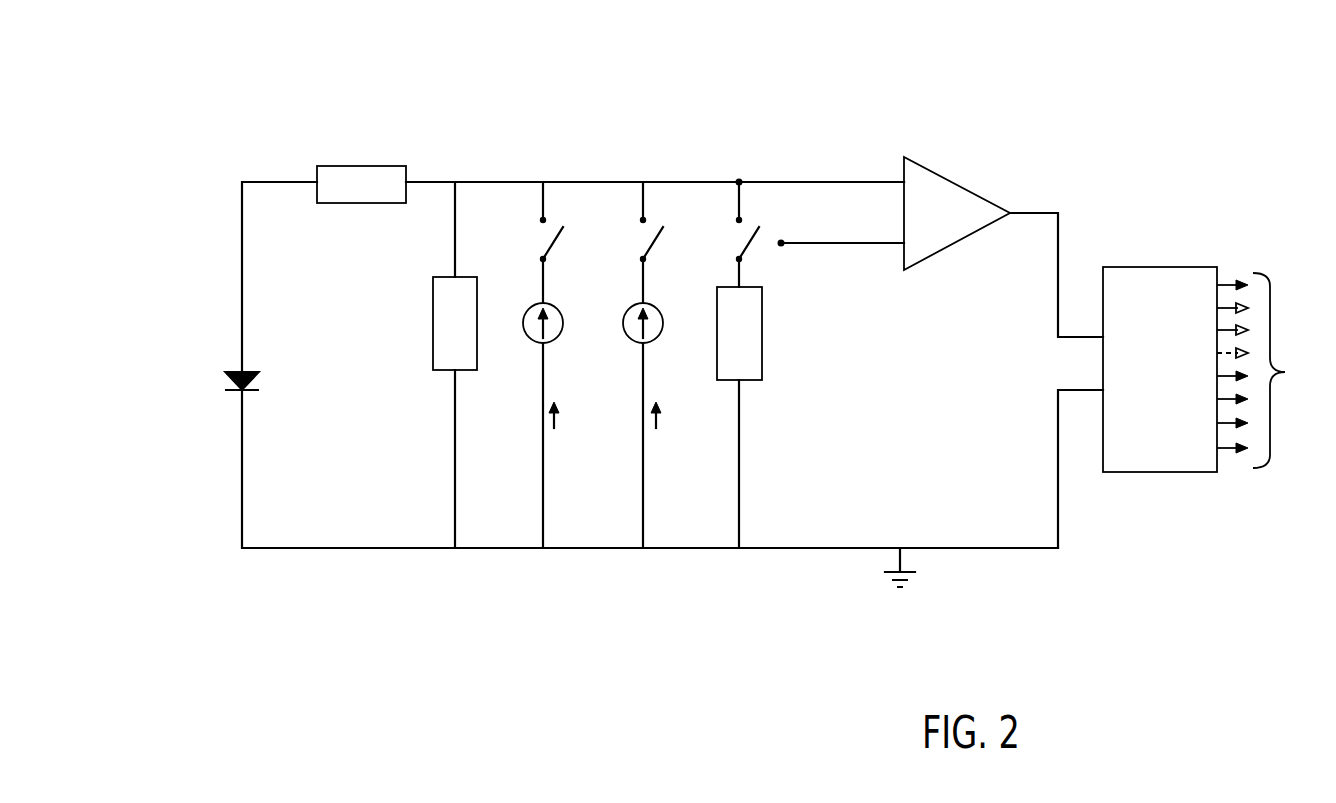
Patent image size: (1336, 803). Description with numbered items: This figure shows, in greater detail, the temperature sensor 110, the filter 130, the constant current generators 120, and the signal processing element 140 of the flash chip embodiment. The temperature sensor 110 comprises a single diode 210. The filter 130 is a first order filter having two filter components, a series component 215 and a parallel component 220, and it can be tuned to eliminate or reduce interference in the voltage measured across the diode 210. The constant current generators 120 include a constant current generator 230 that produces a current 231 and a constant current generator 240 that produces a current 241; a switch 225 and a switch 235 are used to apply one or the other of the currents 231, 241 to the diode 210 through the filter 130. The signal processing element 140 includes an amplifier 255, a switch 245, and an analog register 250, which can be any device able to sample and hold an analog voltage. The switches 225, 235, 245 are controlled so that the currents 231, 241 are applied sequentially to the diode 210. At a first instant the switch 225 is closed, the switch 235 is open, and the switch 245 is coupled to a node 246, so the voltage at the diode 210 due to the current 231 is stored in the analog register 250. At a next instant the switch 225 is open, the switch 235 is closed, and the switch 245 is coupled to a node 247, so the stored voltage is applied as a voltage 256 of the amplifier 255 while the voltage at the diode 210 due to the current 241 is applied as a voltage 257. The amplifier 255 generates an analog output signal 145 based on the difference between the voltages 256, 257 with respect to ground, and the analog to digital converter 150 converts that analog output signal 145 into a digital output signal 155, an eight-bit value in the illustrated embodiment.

The temperature sensor 110 is at (622, 431).
The diode 210 is at (276, 380).
The filter 130 is at (608, 300).
The series component 215 is at (384, 196).
The parallel component 220 is at (455, 365).
The constant current generators 120 is at (615, 441).
The switch 225 is at (573, 222).
The switch 235 is at (673, 222).
The switch 245 is at (768, 222).
The constant current generator 230 is at (564, 403).
The constant current generator 240 is at (664, 403).
The current 231 is at (577, 418).
The current 241 is at (679, 418).
The analog register 250 is at (722, 353).
The signal processing element 140 is at (876, 301).
The node 246 is at (748, 170).
The node 247 is at (779, 250).
The voltage 256 is at (842, 257).
The voltage 257 is at (832, 168).
The amplifier 255 is at (958, 243).
The analog output signal 145 is at (1025, 380).
The analog to digital converter 150 is at (1130, 386).
The digital output signal 155 is at (1285, 372).